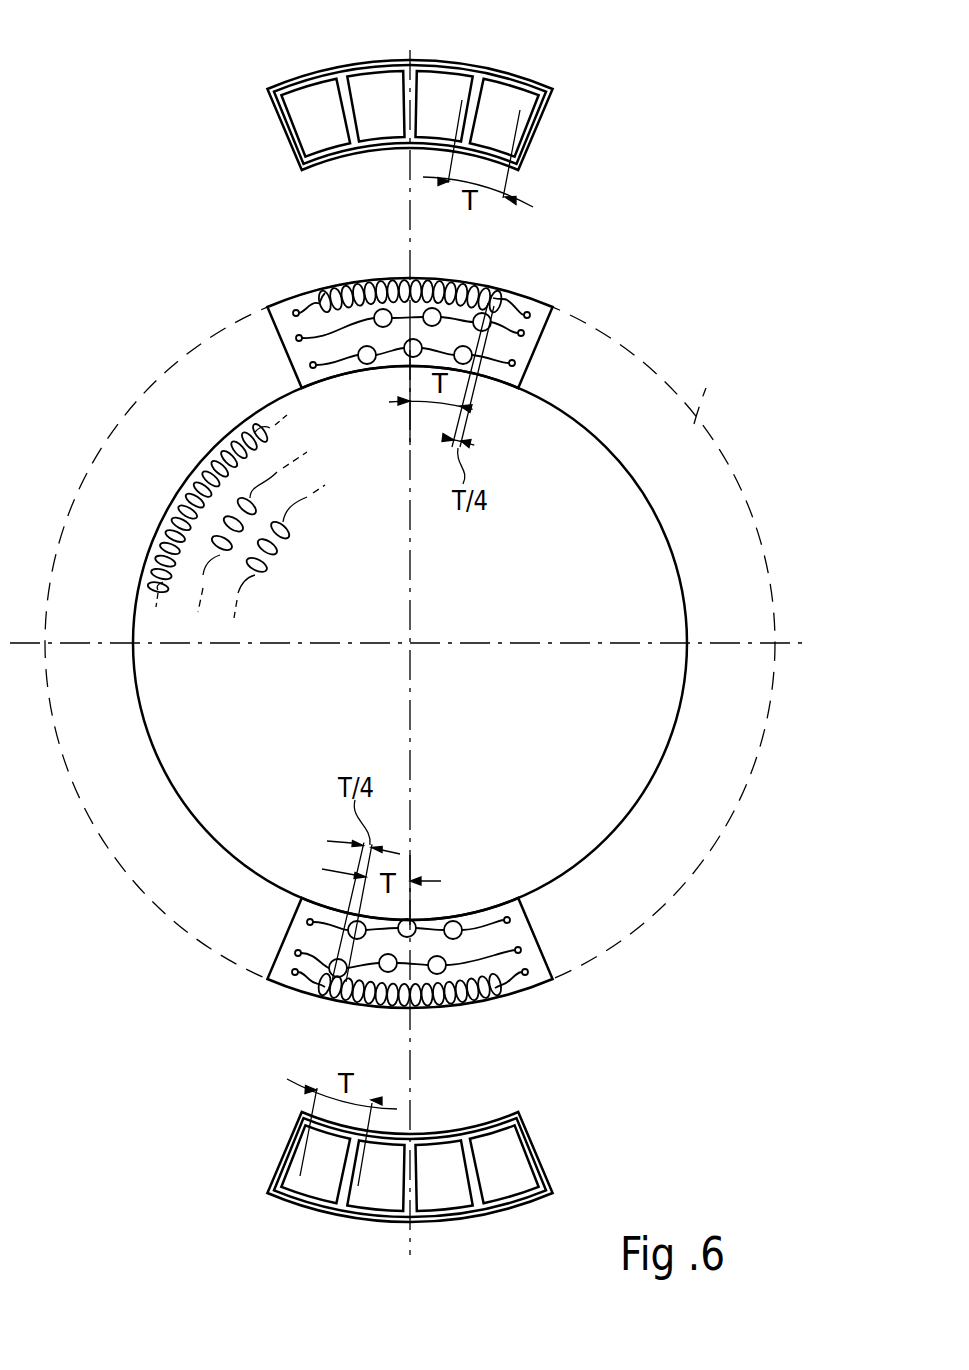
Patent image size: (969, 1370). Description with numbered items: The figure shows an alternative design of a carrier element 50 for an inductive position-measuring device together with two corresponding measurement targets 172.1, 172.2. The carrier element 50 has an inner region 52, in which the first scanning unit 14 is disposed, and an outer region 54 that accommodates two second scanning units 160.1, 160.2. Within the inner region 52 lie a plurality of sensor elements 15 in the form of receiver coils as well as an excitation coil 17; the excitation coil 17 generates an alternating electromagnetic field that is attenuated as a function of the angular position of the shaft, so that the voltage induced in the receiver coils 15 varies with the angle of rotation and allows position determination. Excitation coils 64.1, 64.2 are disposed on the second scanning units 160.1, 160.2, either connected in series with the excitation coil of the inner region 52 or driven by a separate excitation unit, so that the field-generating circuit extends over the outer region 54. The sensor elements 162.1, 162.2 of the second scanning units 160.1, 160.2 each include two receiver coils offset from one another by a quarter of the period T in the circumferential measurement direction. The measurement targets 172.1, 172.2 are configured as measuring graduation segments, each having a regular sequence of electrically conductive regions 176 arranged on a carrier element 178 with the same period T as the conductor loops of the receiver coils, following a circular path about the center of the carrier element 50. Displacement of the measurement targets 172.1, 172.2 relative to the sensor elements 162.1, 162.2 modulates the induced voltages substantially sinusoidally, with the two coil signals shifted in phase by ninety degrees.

The scanning unit 14 is at (690, 595).
The sensor elements 15 is at (238, 594).
The excitation coil 17 is at (186, 500).
The carrier element 50 is at (728, 457).
The inner region 52 is at (487, 643).
The outer region 54 is at (694, 422).
The excitation coil 64.1 is at (490, 292).
The excitation coil 64.2 is at (330, 990).
The second scanning unit 160.1 is at (335, 276).
The second scanning unit 160.2 is at (470, 1008).
The sensor element 162.1 is at (293, 352).
The sensor element 162.2 is at (530, 930).
The measurement target 172.1 is at (409, 87).
The measurement target 172.2 is at (480, 1213).
The electrically conductive regions 176 is at (455, 85).
The carrier element 178 is at (409, 115).